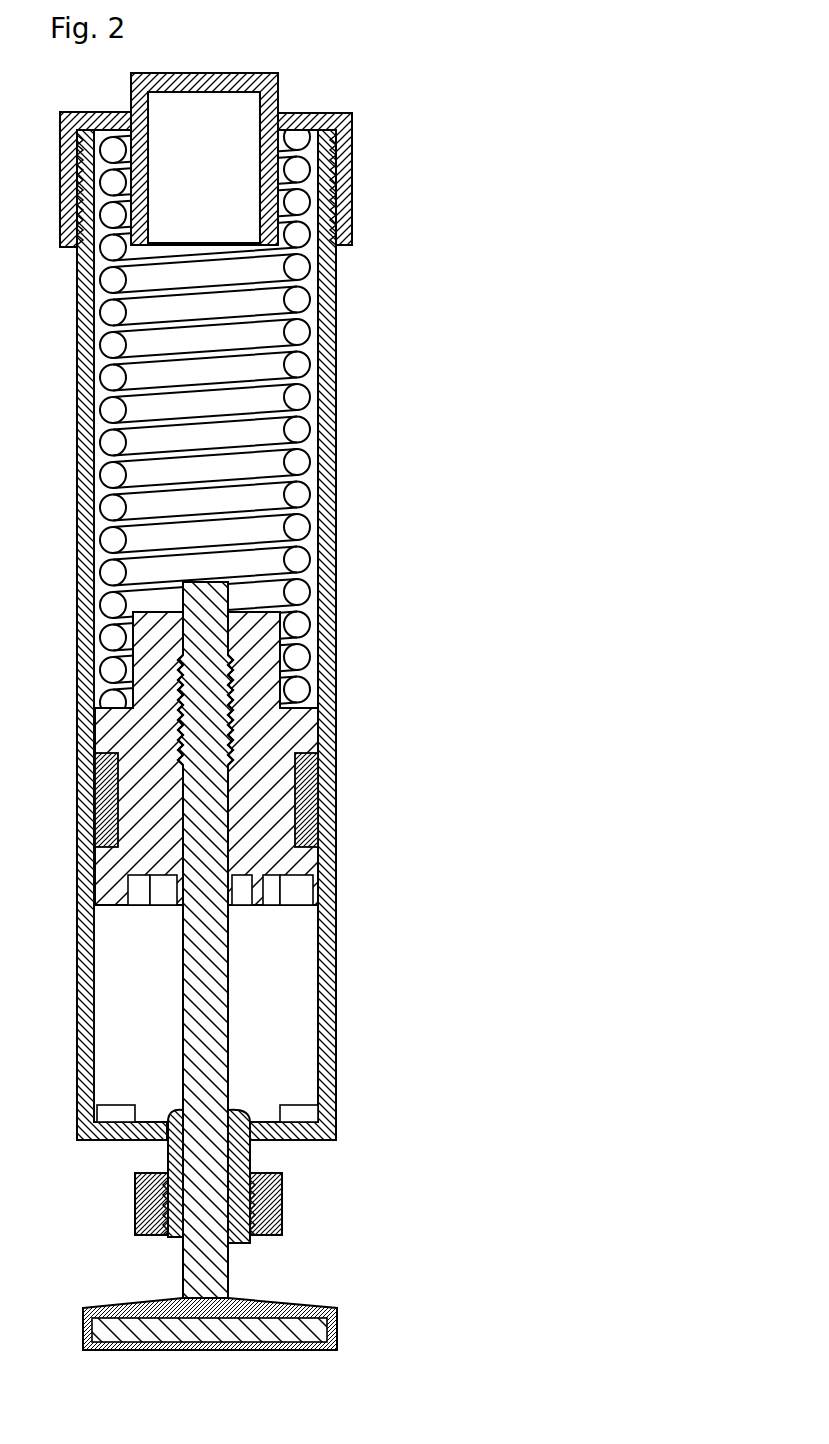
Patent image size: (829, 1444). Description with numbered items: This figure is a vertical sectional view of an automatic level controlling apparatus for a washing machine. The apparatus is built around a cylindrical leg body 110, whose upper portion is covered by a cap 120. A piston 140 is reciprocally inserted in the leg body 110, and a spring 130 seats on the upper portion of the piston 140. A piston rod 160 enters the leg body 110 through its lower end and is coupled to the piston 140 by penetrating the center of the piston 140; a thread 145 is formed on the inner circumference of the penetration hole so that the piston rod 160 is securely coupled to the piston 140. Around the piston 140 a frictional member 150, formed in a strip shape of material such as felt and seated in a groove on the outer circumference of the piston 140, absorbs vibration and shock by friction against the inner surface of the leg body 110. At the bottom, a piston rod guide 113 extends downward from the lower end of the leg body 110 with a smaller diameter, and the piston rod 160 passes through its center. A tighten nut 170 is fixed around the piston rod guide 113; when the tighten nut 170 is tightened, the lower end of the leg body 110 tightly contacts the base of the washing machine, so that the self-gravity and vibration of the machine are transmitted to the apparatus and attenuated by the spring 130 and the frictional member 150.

The leg body 110 is at (338, 1004).
The piston rod guide 113 is at (250, 1152).
The cap 120 is at (350, 158).
The spring 130 is at (300, 461).
The piston 140 is at (245, 647).
The thread 145 is at (230, 717).
The frictional member 150 is at (310, 796).
The piston rod 160 is at (212, 1267).
The tighten nut 170 is at (265, 1200).